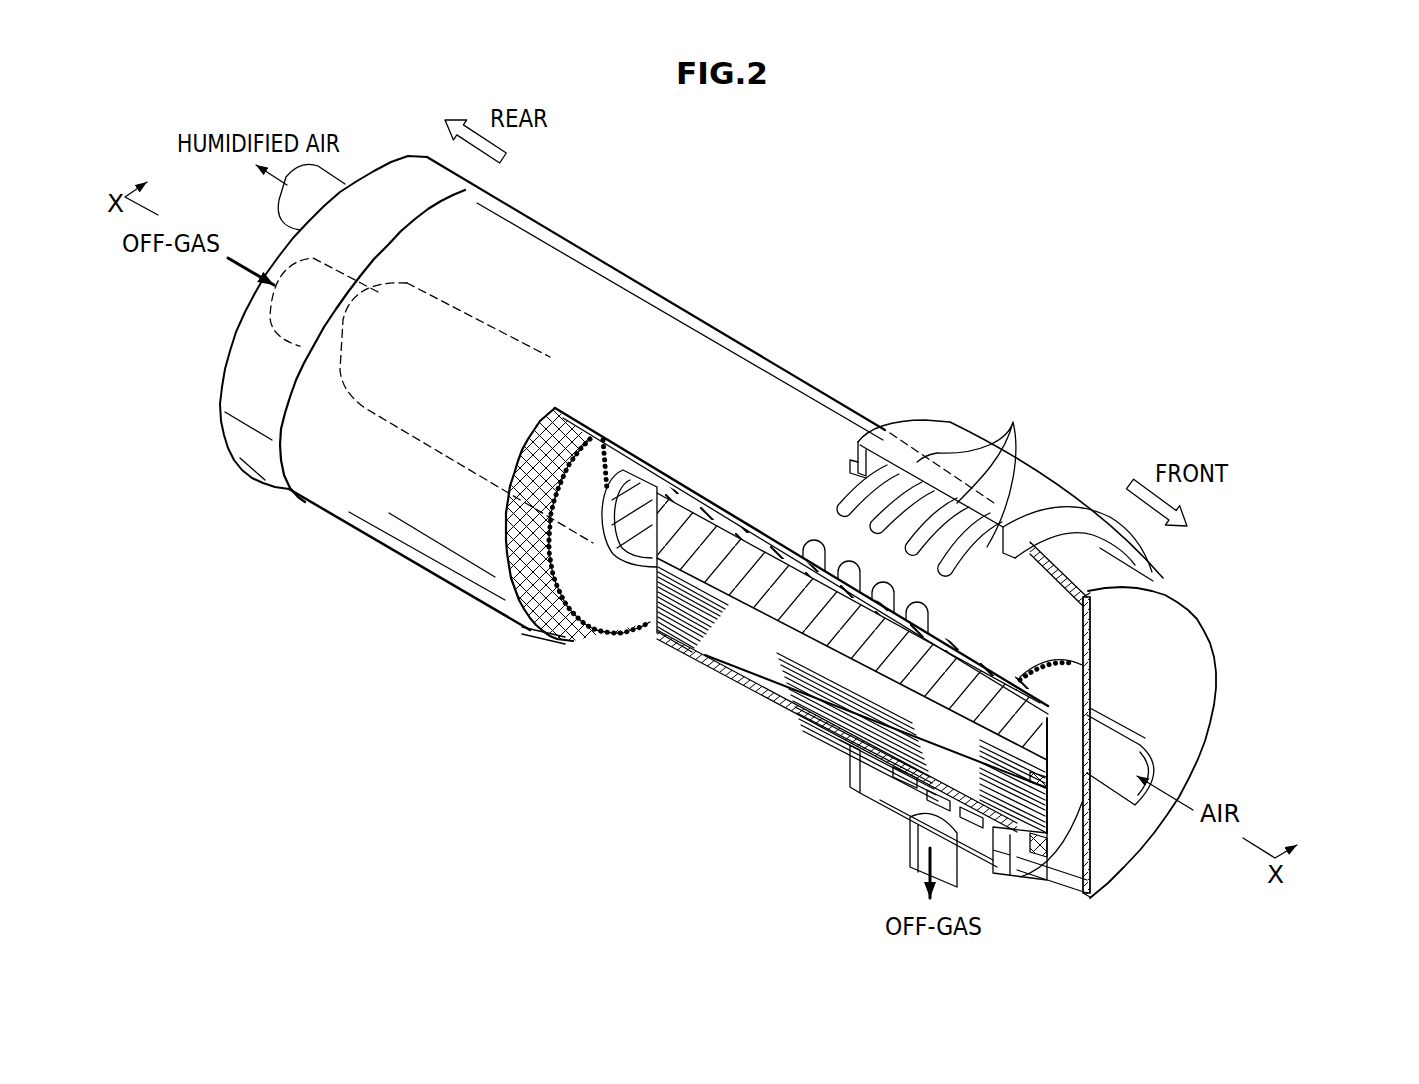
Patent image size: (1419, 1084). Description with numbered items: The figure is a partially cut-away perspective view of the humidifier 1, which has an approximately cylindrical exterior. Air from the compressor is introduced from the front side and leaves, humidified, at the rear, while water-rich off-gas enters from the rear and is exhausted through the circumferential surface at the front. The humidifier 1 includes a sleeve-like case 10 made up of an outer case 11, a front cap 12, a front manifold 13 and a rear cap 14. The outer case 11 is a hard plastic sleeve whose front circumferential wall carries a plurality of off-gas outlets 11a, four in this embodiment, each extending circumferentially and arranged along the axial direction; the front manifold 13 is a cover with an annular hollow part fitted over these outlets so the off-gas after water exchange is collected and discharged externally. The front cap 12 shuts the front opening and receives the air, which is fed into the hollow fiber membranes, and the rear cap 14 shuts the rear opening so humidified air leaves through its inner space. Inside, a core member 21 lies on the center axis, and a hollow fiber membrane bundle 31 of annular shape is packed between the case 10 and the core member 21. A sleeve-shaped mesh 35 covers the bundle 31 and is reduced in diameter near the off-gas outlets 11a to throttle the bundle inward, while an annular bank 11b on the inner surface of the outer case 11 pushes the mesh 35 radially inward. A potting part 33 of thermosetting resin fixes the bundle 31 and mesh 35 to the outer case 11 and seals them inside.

The humidifier 1 is at (850, 194).
The case 10 is at (1252, 681).
The outer case 11 is at (667, 340).
The off-gas outlets 11a is at (1013, 445).
The annular bank 11b is at (840, 740).
The front cap 12 is at (1163, 578).
The front manifold 13 is at (903, 437).
The rear cap 14 is at (262, 487).
The core member 21 is at (797, 617).
The hollow fiber membrane bundle 31 is at (673, 643).
The potting part 33 is at (1027, 867).
The mesh 35 is at (541, 625).